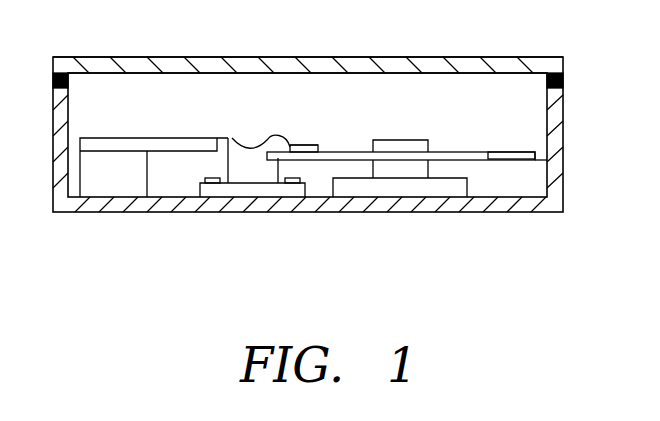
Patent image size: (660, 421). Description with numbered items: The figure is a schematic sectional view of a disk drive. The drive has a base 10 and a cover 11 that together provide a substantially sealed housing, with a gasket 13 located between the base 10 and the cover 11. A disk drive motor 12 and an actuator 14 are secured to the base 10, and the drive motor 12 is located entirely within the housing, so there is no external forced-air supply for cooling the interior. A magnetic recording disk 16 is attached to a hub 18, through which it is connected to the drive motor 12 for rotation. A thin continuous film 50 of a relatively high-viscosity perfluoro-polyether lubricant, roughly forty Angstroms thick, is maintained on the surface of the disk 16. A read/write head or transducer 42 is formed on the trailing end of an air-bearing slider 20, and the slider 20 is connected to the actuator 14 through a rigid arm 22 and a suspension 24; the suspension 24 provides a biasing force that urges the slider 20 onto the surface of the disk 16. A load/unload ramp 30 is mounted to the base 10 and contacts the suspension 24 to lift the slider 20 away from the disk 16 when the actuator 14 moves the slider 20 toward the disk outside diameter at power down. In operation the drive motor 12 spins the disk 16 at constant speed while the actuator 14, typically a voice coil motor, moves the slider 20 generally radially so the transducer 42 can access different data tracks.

The base 10 is at (518, 202).
The cover 11 is at (72, 62).
The disk drive motor 12 is at (408, 188).
The gasket 13 is at (563, 76).
The actuator 14 is at (125, 191).
The magnetic recording disk 16 is at (548, 158).
The hub 18 is at (399, 140).
The air-bearing slider 20 is at (313, 145).
The rigid arm 22 is at (147, 137).
The suspension 24 is at (231, 138).
The load/unload ramp 30 is at (268, 140).
The read/write head or transducer 42 is at (291, 146).
The thin continuous film of lubricant 50 is at (505, 152).